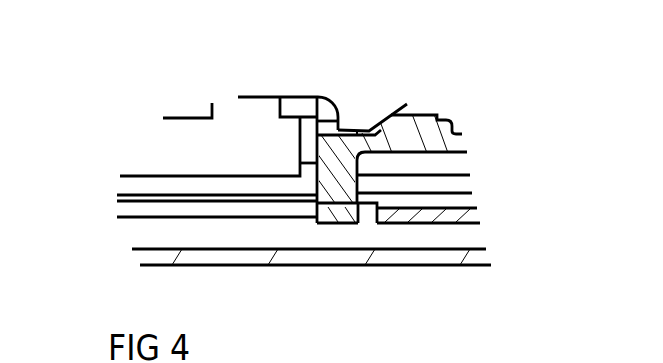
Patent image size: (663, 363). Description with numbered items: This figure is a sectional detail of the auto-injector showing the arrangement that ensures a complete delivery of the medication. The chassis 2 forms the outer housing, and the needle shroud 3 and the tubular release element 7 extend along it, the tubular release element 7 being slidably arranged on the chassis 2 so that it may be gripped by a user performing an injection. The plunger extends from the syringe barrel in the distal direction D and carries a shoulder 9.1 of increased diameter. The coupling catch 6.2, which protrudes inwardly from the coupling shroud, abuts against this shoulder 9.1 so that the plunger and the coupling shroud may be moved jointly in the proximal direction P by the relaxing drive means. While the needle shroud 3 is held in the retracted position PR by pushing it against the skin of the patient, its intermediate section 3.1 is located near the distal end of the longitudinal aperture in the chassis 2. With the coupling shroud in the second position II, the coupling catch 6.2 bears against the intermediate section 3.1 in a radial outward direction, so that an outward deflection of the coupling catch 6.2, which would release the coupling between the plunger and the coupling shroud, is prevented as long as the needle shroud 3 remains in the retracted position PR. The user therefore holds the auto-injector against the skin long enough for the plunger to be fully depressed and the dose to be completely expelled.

The coupling catch 6.2 is at (338, 160).
The shoulder 9.1 is at (340, 115).
The chassis 2 is at (472, 216).
The needle shroud 3 is at (343, 207).
The intermediate section 3.1 is at (341, 214).
The tubular release element 7 is at (142, 259).
The proximal direction P is at (186, 167).
The distal direction D is at (454, 177).
The second position II is at (370, 159).
The retracted position PR is at (312, 230).